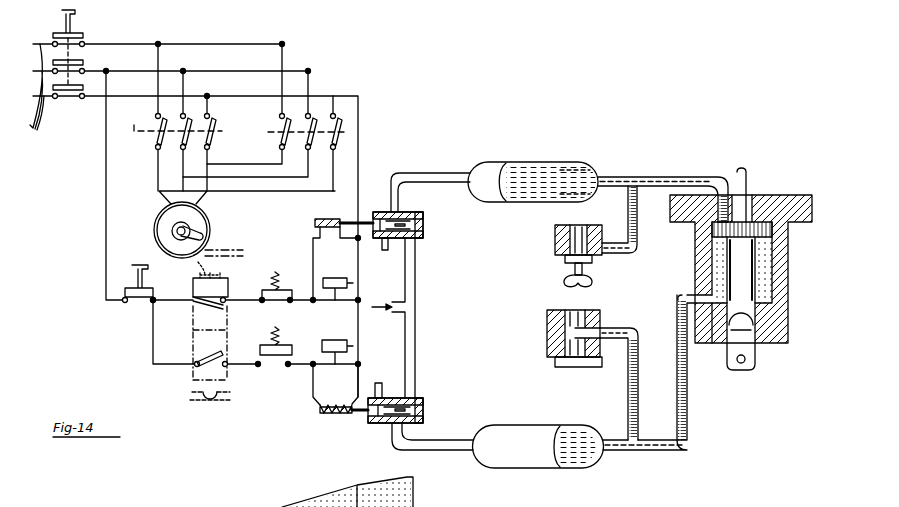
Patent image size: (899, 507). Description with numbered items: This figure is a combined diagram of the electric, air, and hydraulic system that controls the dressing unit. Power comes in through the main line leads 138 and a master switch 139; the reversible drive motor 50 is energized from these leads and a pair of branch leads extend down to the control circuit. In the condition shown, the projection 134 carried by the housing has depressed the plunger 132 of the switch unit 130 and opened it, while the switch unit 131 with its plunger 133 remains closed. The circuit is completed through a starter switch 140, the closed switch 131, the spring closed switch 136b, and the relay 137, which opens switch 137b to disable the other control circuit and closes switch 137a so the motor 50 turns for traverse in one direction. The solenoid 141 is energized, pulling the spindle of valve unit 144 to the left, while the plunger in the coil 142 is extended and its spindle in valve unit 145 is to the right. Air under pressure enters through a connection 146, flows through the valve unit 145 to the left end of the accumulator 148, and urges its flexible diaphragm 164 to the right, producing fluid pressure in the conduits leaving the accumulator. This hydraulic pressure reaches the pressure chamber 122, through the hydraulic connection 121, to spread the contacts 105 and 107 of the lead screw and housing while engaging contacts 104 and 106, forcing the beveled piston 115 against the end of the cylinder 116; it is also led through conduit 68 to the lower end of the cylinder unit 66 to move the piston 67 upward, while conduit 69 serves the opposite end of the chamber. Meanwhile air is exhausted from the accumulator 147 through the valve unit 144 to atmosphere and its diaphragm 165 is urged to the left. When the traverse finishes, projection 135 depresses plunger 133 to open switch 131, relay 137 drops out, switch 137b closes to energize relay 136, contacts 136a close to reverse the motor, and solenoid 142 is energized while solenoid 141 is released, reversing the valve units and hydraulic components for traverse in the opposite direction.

The reversible drive motor 50 is at (206, 224).
The cylinder unit 66 is at (781, 259).
The piston 67 is at (750, 220).
The conduit 68 is at (690, 380).
The conduit 69 is at (676, 179).
The contact 104 is at (592, 282).
The contact of the lead screw 105 is at (596, 322).
The contact 106 is at (584, 272).
The contact 107 is at (560, 350).
The piston 115 is at (565, 259).
The cylinder 116 is at (560, 232).
The hydraulic connection 121 is at (627, 358).
The pressure chamber 122 is at (548, 328).
The switch unit 130 is at (222, 352).
The switch unit 131 is at (229, 292).
The plunger 132 is at (195, 392).
The plunger 133 is at (198, 262).
The projection 134 is at (216, 398).
The projection 135 is at (230, 244).
The relay 136 is at (334, 340).
The contacts 136a is at (272, 132).
The spring closed switch 136b is at (284, 262).
The relay 137 is at (334, 278).
The switch 137a is at (167, 117).
The switch 137b is at (288, 322).
The main line leads 138 is at (51, 90).
The master switch 139 is at (76, 23).
The starter switch 140 is at (124, 287).
The solenoid 141 is at (317, 220).
The solenoid 142 is at (336, 416).
The valve unit 144 is at (372, 212).
The valve unit 145 is at (390, 398).
The connection 146 is at (376, 302).
The accumulator 147 is at (507, 163).
The accumulator 148 is at (525, 463).
The flexible diaphragm 164 is at (560, 428).
The diaphragm 165 is at (504, 198).